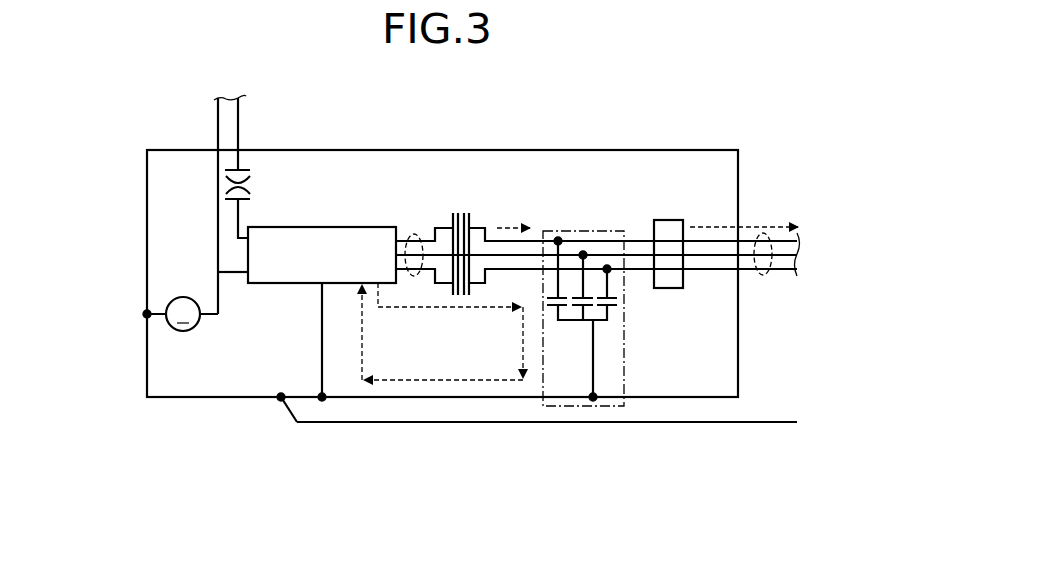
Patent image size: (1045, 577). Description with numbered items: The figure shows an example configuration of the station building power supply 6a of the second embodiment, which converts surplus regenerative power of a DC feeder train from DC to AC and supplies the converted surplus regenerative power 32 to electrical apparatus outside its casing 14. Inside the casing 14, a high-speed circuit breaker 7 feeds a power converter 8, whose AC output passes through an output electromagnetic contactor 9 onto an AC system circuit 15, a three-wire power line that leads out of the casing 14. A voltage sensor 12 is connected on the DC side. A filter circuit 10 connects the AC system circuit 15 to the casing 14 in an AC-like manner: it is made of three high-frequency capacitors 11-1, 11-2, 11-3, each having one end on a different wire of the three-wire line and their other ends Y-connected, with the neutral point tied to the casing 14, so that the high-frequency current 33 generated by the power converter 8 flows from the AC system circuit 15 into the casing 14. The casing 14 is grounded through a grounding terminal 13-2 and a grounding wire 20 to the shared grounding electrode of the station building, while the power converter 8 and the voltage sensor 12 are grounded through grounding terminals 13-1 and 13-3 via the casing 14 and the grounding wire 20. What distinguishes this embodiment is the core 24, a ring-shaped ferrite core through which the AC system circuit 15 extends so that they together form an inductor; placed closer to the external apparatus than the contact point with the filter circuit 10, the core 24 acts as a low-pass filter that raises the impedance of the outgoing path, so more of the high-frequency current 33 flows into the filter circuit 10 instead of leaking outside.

The station building power supply 6a is at (186, 135).
The high-speed circuit breaker 7 is at (240, 169).
The power converter 8 is at (331, 227).
The output electromagnetic contactor 9 is at (452, 222).
The filter circuit 10 is at (597, 363).
The high-frequency capacitor 11-1 is at (553, 306).
The high-frequency capacitor 11-2 is at (573, 321).
The high-frequency capacitor 11-3 is at (610, 306).
The voltage sensor 12 is at (182, 297).
The grounding terminal 13-1 is at (321, 392).
The grounding terminal 13-2 is at (281, 399).
The grounding terminal 13-3 is at (146, 314).
The casing 14 is at (147, 230).
The AC system circuit 15 is at (416, 278).
The grounding wire 20 is at (768, 421).
The core 24 is at (670, 289).
The surplus regenerative power 32 is at (506, 223).
The high-frequency current 33 is at (486, 308).